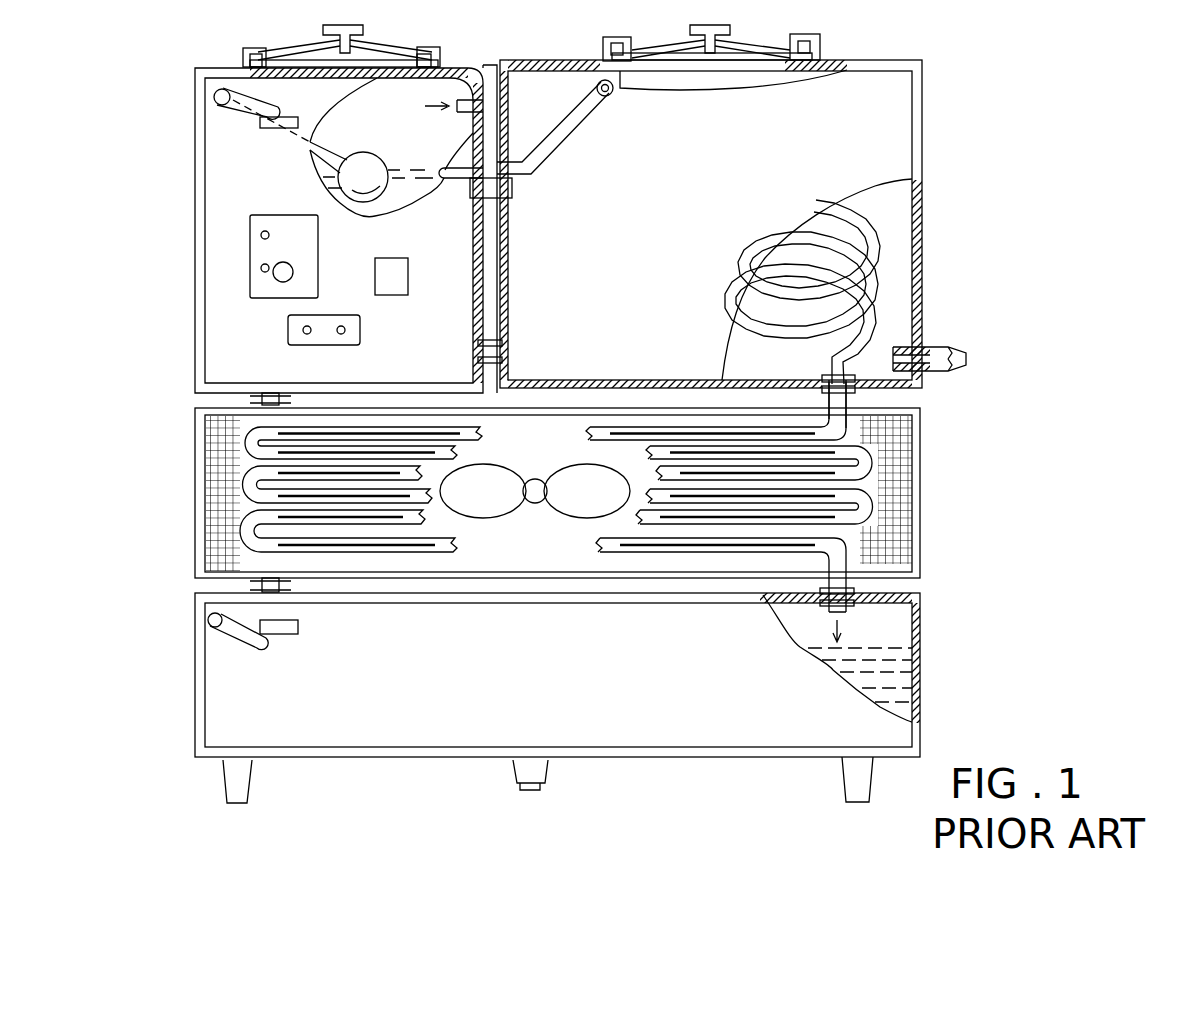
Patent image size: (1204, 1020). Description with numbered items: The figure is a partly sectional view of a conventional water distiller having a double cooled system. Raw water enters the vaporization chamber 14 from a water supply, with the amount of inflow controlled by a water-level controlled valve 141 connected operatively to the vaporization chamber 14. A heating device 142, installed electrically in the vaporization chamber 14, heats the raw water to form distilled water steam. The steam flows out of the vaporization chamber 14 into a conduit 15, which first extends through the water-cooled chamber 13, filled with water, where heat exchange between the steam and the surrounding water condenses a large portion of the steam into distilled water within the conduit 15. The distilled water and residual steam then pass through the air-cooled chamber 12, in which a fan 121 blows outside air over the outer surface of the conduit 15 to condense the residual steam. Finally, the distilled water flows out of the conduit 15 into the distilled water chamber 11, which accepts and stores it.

The distilled water chamber 11 is at (897, 622).
The air-cooled chamber 12 is at (900, 440).
The fan 121 is at (556, 465).
The water-cooled chamber 13 is at (872, 197).
The vaporization chamber 14 is at (450, 82).
The water-level controlled valve 141 is at (278, 137).
The heating device 142 is at (292, 331).
The conduit 15 is at (467, 68).